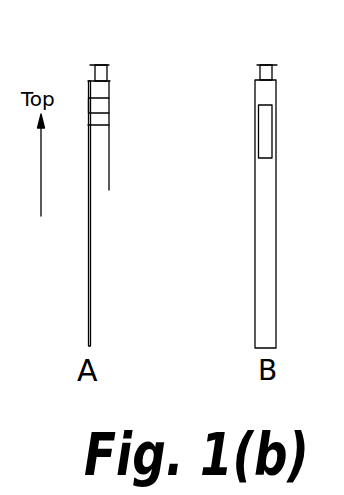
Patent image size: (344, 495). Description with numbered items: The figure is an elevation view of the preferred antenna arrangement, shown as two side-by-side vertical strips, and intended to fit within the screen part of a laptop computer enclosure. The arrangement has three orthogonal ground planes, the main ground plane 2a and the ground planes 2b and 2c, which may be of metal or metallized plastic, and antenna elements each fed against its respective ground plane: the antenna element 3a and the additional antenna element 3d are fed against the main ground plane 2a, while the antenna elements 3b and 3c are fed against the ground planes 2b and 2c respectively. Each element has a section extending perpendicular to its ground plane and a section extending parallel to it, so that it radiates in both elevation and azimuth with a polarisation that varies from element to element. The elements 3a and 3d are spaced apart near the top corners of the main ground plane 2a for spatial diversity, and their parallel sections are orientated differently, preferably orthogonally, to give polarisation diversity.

The main ground plane 2a is at (88, 277).
The ground plane 2b is at (105, 80).
The ground plane 2c is at (260, 213).
The antenna element 3a is at (108, 163).
The antenna element 3b is at (108, 70).
The antenna element 3c is at (266, 115).
The additional antenna element 3d is at (107, 100).